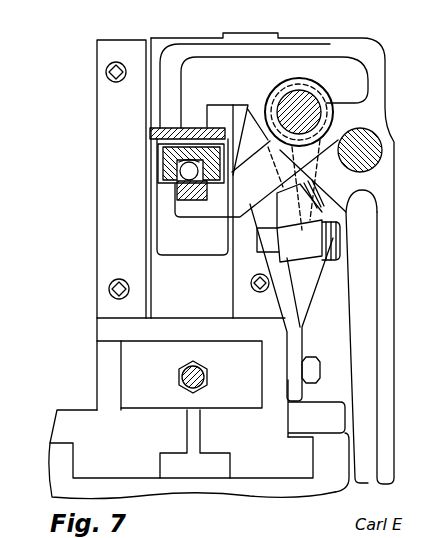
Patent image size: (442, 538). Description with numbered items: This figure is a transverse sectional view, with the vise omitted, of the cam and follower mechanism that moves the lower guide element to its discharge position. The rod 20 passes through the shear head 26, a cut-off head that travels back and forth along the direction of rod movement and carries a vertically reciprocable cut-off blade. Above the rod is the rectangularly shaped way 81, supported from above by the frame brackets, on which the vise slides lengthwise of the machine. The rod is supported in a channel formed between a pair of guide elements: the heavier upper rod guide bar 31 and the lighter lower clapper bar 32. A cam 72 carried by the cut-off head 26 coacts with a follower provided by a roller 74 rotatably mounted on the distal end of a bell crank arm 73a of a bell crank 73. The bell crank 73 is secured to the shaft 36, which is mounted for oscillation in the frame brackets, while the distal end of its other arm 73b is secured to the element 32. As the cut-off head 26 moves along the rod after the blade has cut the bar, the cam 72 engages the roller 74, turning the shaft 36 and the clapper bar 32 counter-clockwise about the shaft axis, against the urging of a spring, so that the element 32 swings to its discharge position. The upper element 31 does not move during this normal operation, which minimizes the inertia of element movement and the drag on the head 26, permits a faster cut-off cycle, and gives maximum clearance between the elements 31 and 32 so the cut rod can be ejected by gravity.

The shear head 26 is at (100, 113).
The way 81 is at (151, 130).
The rod guide bar 31 is at (163, 151).
The wire or rod 20 is at (186, 170).
The clapper bar 32 is at (180, 190).
The bell crank 73 is at (290, 80).
The shaft 36 is at (313, 97).
The bell crank arm 73a is at (246, 205).
The bell crank arm 73b is at (277, 184).
The cam 72 is at (265, 254).
The roller 74 is at (338, 231).